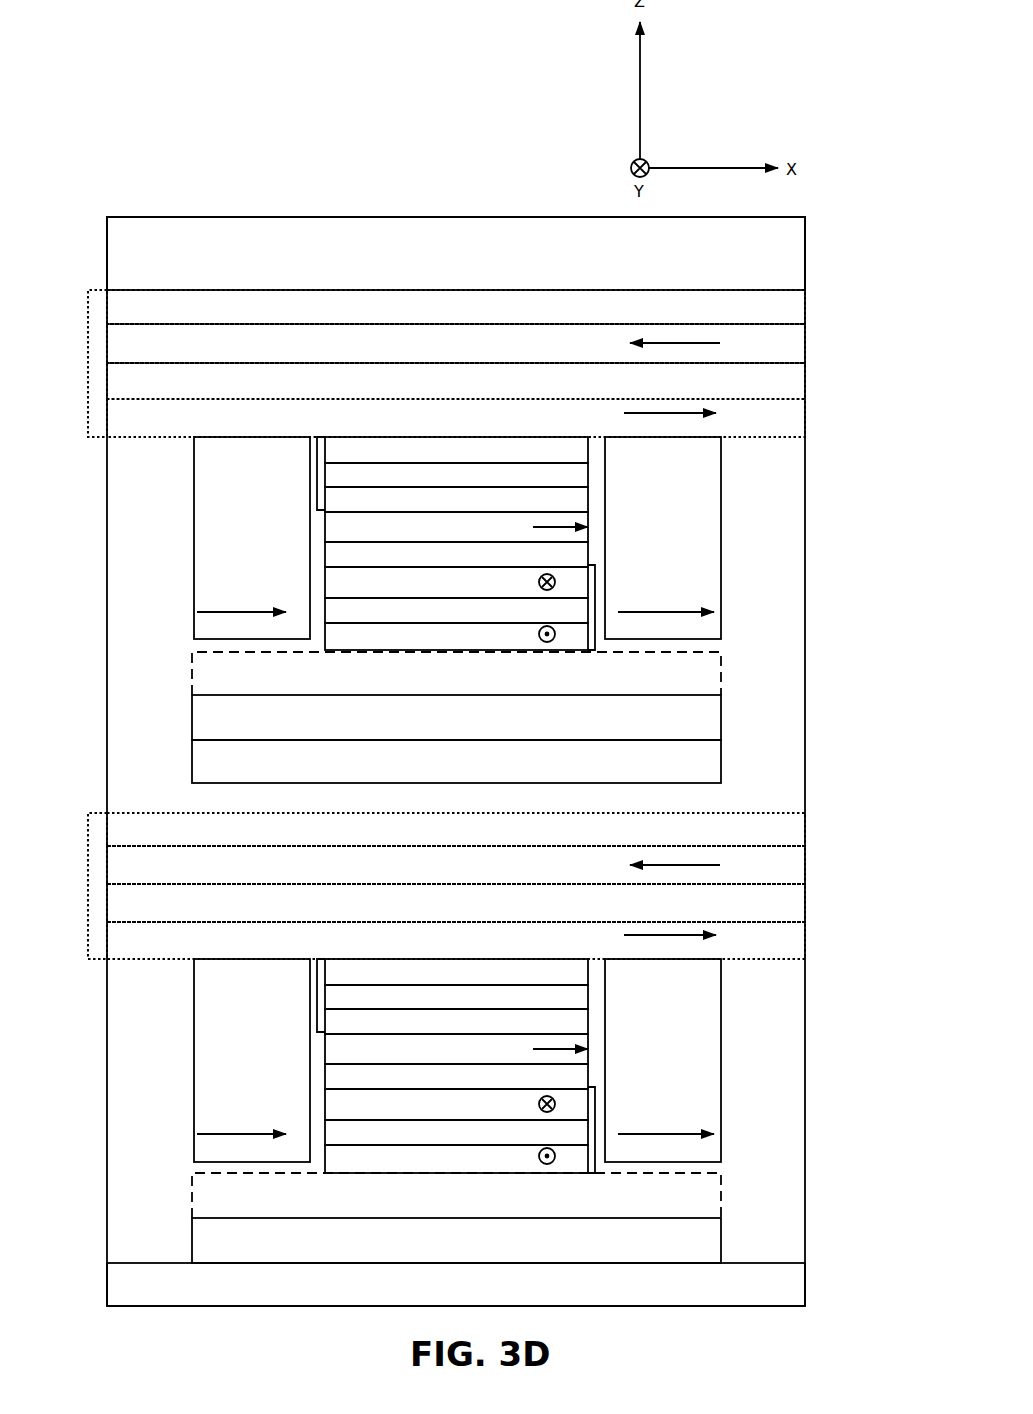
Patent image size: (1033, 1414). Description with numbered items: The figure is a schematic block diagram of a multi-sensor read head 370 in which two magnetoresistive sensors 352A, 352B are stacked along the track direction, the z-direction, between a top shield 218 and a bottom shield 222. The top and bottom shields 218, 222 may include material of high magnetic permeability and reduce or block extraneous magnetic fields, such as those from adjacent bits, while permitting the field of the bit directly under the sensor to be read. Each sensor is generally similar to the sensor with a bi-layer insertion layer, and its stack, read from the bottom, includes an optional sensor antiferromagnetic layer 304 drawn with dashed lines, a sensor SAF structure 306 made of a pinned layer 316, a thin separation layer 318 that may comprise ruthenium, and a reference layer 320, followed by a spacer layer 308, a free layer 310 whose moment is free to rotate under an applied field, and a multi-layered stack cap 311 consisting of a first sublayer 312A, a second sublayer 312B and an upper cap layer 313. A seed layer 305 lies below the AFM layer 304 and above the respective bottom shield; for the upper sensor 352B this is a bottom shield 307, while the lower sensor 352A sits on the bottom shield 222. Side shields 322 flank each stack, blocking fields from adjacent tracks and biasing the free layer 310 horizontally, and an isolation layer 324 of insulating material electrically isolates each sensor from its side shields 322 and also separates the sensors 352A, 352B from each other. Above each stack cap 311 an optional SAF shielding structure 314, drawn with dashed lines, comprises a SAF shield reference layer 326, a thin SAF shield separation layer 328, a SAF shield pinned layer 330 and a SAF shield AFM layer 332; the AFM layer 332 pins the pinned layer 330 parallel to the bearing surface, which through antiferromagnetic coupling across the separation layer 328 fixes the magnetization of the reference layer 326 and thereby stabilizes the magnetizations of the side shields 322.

The read head 370 is at (82, 182).
The top shield 218 is at (571, 261).
The SAF shield AFM layer 332 is at (571, 838).
The SAF shield pinned layer 330 is at (571, 875).
The SAF shield separation layer 328 is at (571, 910).
The SAF shield reference layer 326 is at (571, 943).
The SAF shielding structure 314 is at (88, 369).
The upper cap layer 313 is at (396, 459).
The second sublayer 312B is at (405, 484).
The first sublayer 312A is at (405, 509).
The free layer 310 is at (396, 537).
The spacer layer 308 is at (396, 563).
The reference layer 320 is at (396, 592).
The separation layer 318 is at (396, 619).
The pinned layer 316 is at (396, 644).
The side shields 322 is at (672, 1075).
The stack cap 311 is at (317, 468).
The sensor stack synthetic antiferromagnetic structure 306 is at (595, 603).
The isolation layer 324 is at (317, 573).
The sensor antiferromagnetic layer 304 is at (556, 1204).
The seed layer 305 is at (556, 1247).
The bottom shield 307 is at (556, 770).
The bottom shield 222 is at (556, 1293).
The magnetoresistive sensor 352B is at (832, 571).
The magnetoresistive sensor 352A is at (832, 1093).